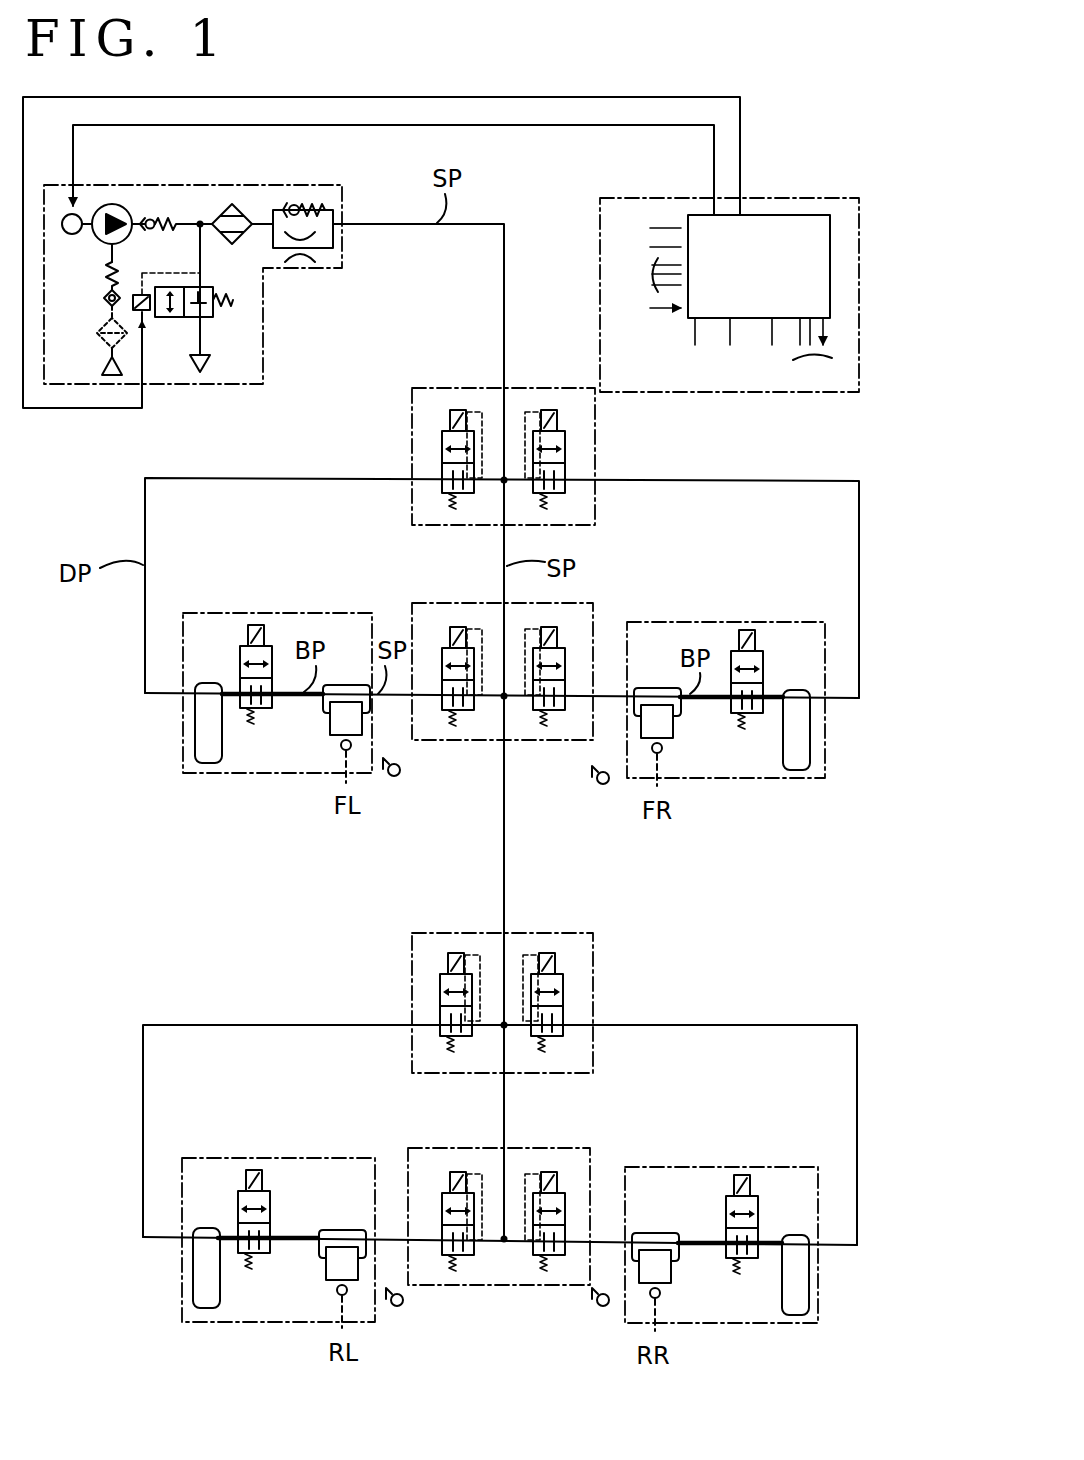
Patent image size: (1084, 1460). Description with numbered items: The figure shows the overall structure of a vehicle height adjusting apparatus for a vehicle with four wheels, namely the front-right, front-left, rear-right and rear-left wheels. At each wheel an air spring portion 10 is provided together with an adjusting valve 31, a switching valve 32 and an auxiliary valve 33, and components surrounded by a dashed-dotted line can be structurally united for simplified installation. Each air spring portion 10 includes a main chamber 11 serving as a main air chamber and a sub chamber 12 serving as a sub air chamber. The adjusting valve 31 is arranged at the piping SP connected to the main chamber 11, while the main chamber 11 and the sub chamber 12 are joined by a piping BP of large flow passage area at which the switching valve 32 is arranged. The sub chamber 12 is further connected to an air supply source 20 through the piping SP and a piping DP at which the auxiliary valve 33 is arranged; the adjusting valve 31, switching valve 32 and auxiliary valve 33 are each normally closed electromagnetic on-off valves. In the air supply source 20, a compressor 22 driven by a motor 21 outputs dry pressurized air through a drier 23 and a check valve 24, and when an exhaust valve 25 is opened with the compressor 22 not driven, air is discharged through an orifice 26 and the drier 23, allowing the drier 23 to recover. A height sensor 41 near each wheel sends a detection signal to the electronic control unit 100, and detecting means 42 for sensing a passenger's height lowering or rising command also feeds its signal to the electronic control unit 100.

The air spring portion 10 is at (275, 792).
The main chamber 11 is at (655, 688).
The sub chamber 12 is at (795, 1297).
The air supply source 20 is at (178, 386).
The motor 21 is at (68, 236).
The compressor 22 is at (103, 206).
The drier 23 is at (227, 205).
The check valve 24 is at (316, 205).
The exhaust valve 25 is at (208, 320).
The orifice 26 is at (326, 256).
The adjusting valve 31 is at (530, 1258).
The switching valve 32 is at (734, 1262).
The auxiliary valve 33 is at (546, 953).
The height sensor 41 is at (600, 1307).
The detecting means 42 is at (796, 180).
The electronic control unit 100 is at (830, 262).